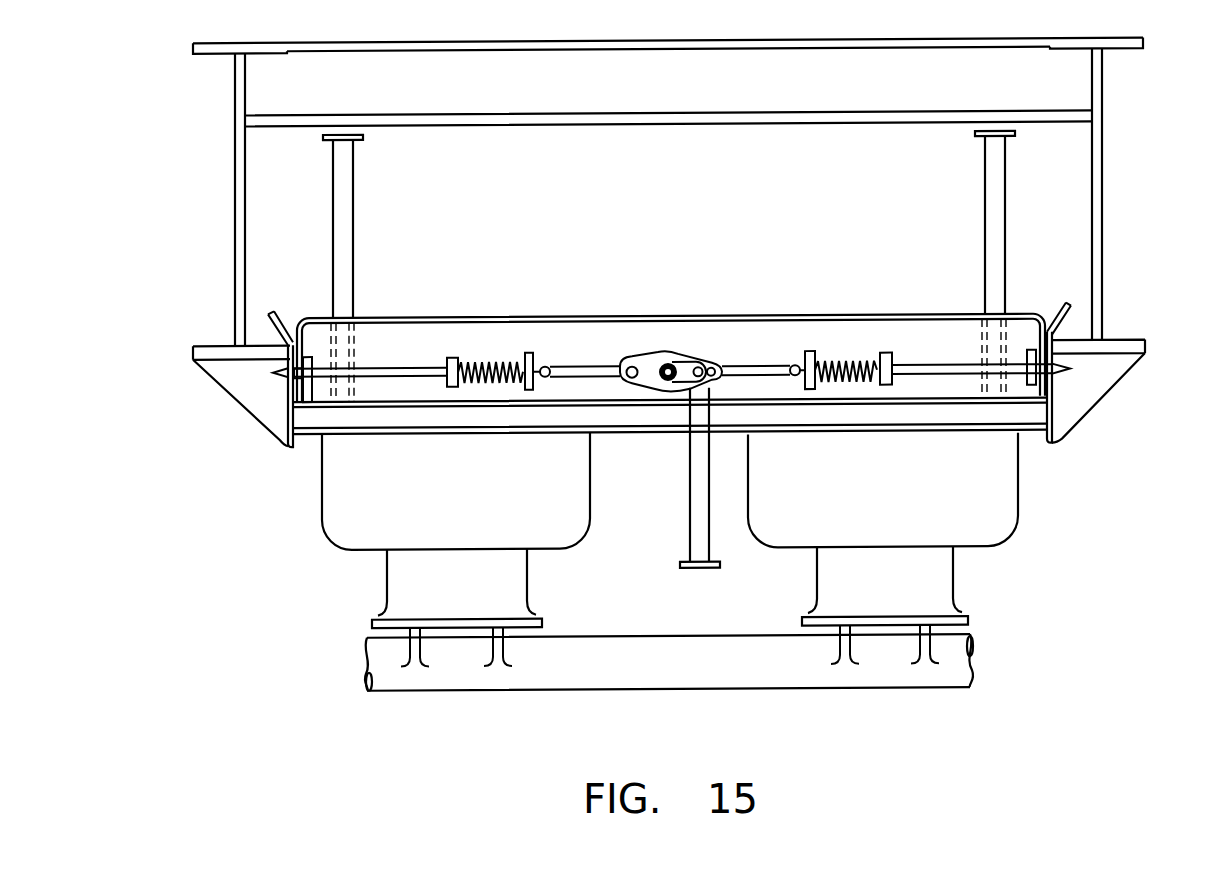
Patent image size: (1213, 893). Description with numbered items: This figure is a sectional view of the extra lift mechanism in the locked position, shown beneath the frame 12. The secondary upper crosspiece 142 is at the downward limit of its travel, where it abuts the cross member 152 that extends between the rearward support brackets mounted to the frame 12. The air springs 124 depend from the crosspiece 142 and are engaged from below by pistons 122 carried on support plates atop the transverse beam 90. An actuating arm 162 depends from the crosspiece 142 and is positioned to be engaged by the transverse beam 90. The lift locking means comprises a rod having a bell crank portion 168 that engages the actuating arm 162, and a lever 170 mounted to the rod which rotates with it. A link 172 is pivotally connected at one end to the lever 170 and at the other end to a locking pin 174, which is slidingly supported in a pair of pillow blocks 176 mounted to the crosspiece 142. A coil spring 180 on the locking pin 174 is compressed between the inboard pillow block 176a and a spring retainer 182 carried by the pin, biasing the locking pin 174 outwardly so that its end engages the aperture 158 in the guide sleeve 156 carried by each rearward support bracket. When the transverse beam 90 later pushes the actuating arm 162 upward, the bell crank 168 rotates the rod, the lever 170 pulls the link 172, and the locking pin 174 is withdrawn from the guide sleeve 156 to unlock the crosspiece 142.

The frame 12 is at (1103, 193).
The transverse beam 90 is at (543, 678).
The piston 122 is at (407, 584).
The air spring 124 is at (363, 521).
The secondary upper crosspiece 142 is at (925, 319).
The cross member 152 is at (982, 415).
The guide sleeve 156 is at (270, 430).
The aperture 158 is at (275, 379).
The actuating arm 162 is at (692, 480).
The bell crank portion 168 is at (688, 366).
The lever 170 is at (657, 360).
The link 172 is at (572, 370).
The locking pin 174 is at (421, 367).
The pillow blocks 176 is at (308, 428).
The inboard pillow block 176a is at (547, 390).
The coil spring 180 is at (463, 357).
The spring retainer 182 is at (453, 390).